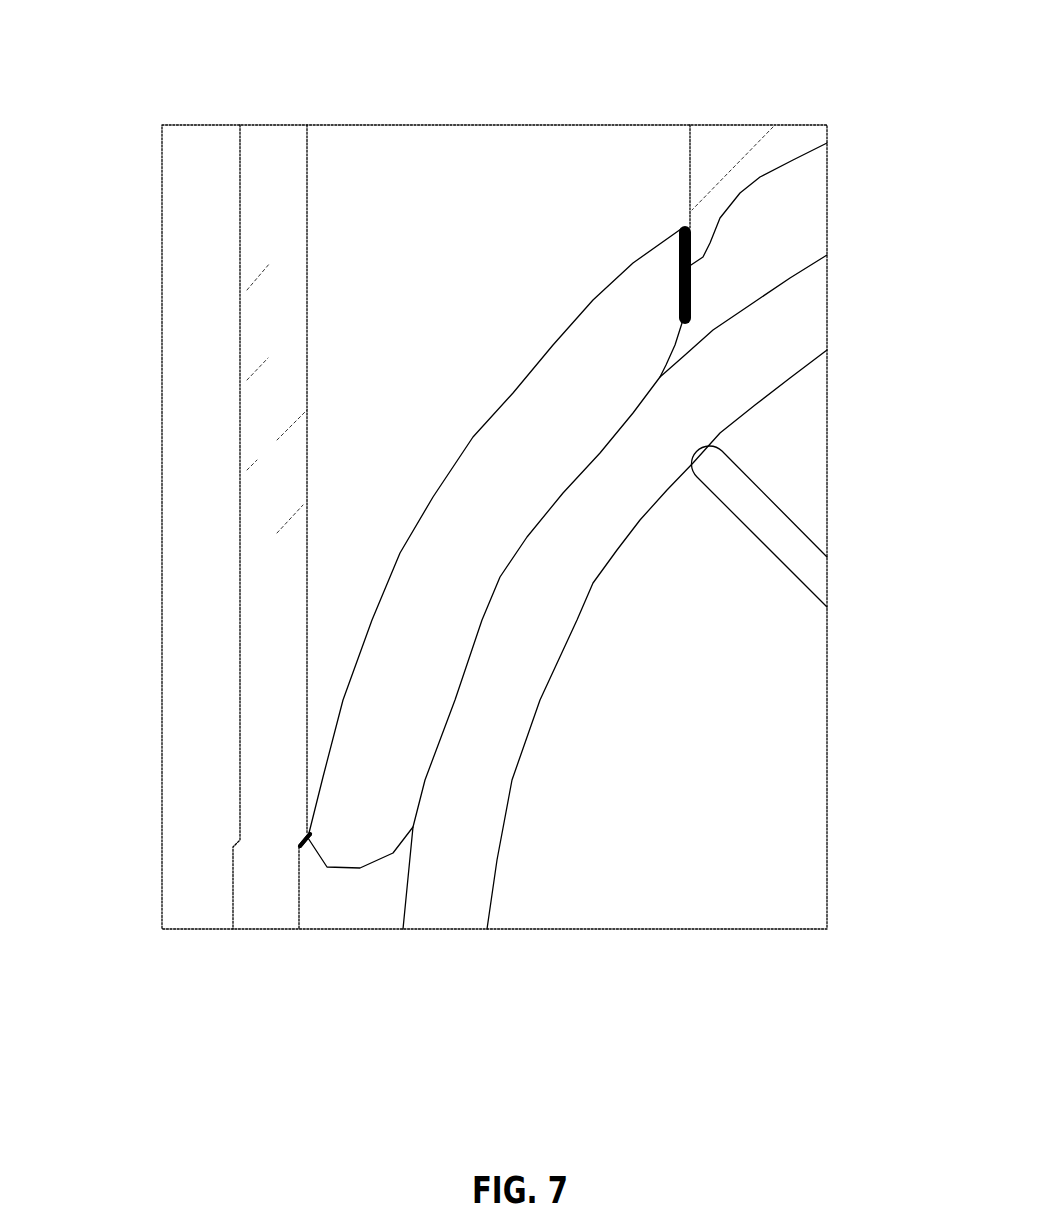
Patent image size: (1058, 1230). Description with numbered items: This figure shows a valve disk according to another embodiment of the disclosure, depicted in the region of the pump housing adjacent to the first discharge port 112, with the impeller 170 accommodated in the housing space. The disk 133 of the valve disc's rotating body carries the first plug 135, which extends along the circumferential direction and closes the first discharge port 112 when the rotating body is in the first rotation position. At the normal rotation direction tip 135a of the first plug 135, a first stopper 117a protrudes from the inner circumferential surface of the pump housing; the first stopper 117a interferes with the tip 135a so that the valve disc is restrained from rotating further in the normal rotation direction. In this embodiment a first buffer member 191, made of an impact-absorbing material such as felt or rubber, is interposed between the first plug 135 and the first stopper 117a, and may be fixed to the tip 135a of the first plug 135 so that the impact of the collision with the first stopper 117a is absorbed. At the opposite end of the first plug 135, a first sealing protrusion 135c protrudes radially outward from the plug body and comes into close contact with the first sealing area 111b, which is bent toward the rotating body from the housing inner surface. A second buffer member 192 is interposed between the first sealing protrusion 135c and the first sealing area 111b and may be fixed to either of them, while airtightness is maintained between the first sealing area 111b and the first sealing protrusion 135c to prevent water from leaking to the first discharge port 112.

The first discharge port 112 is at (373, 302).
The first plug 135 is at (500, 465).
The normal rotation direction tip 135a is at (667, 252).
The first stopper 117a is at (700, 242).
The first buffer member 191 is at (692, 285).
The disk 133 is at (448, 890).
The first sealing area 111b is at (307, 839).
The second buffer member 192 is at (303, 843).
The first sealing protrusion 135c is at (307, 847).
The impeller 170 is at (660, 880).